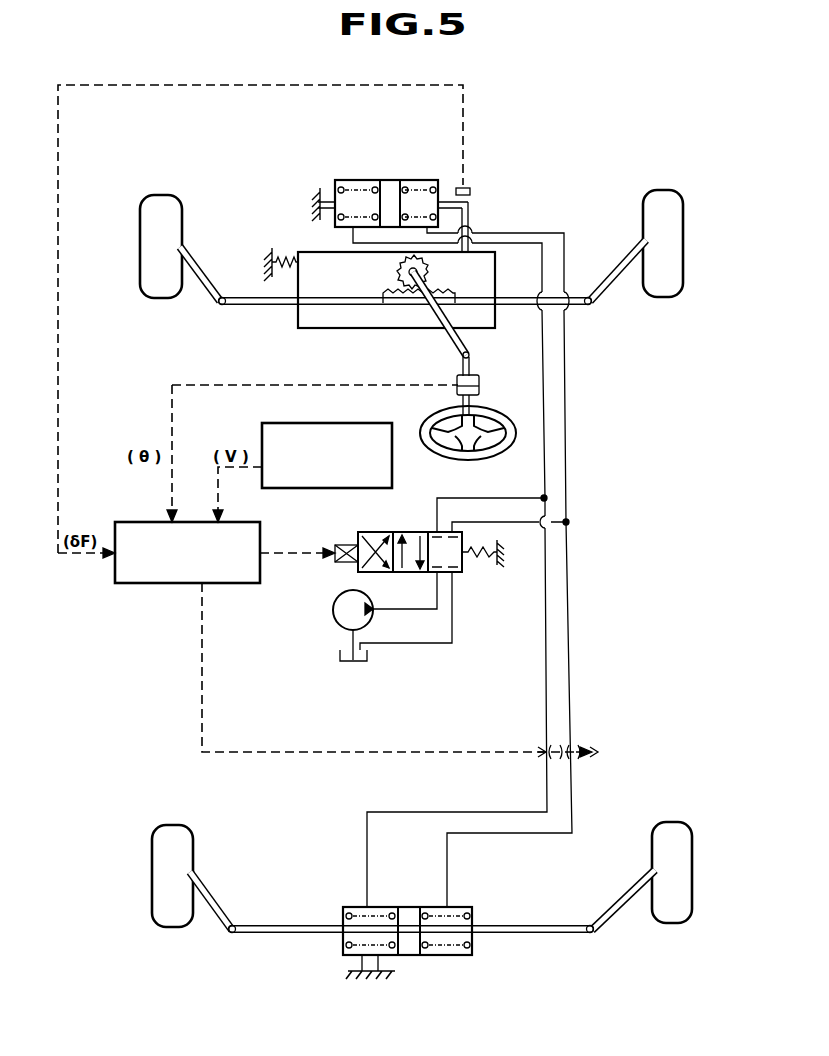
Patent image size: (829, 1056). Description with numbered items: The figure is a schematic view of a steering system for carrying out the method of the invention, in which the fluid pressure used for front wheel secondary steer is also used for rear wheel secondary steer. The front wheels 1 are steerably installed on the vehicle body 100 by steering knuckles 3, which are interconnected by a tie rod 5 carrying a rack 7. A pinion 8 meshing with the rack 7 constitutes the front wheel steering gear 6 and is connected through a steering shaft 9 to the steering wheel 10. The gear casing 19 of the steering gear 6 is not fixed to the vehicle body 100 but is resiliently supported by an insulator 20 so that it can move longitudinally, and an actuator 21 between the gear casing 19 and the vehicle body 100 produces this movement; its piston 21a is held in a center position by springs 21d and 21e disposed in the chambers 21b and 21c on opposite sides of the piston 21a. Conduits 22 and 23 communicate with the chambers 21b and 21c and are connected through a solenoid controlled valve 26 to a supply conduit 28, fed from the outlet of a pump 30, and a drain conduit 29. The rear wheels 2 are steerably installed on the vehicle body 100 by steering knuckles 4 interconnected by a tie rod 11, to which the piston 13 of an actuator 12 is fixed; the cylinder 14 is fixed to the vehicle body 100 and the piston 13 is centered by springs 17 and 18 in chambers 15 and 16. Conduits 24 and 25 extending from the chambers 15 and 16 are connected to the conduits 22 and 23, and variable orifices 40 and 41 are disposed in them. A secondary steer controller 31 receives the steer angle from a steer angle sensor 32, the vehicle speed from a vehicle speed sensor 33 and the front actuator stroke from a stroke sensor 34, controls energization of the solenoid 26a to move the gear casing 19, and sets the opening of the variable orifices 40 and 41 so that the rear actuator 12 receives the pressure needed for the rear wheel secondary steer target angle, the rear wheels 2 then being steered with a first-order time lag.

The front wheel 1 is at (160, 195).
The rear wheel 2 is at (166, 825).
The steering knuckle 3 is at (204, 292).
The steering knuckle 4 is at (210, 890).
The tie rod 5 is at (242, 297).
The front wheel steering gear 6 is at (328, 330).
The rack 7 is at (450, 292).
The pinion 8 is at (398, 271).
The steering shaft 9 is at (462, 345).
The steering wheel 10 is at (455, 458).
The tie rod 11 is at (265, 936).
The actuator 12 is at (417, 921).
The piston 13 is at (412, 955).
The cylinder 14 is at (458, 907).
The chamber 15 is at (358, 908).
The chamber 16 is at (436, 907).
The spring 17 is at (343, 951).
The spring 18 is at (460, 955).
The gear casing 19 is at (318, 252).
The insulator 20 is at (284, 258).
The actuator 21 is at (397, 176).
The piston 21a is at (388, 180).
The chamber 21b is at (357, 187).
The chamber 21c is at (422, 180).
The spring 21d is at (350, 180).
The spring 21e is at (400, 180).
The conduit 22 is at (544, 360).
The conduit 23 is at (567, 400).
The conduit 24 is at (420, 812).
The conduit 25 is at (572, 805).
The solenoid controlled valve 26 is at (358, 567).
The solenoid 26a is at (348, 545).
The supply conduit 28 is at (410, 607).
The drain conduit 29 is at (414, 643).
The pump 30 is at (333, 612).
The secondary steer controller 31 is at (133, 522).
The steer angle sensor 32 is at (456, 383).
The vehicle speed sensor 33 is at (348, 423).
The stroke sensor 34 is at (472, 191).
The variable orifice 40 is at (542, 750).
The variable orifice 41 is at (574, 750).
The vehicle body 100 is at (317, 187).